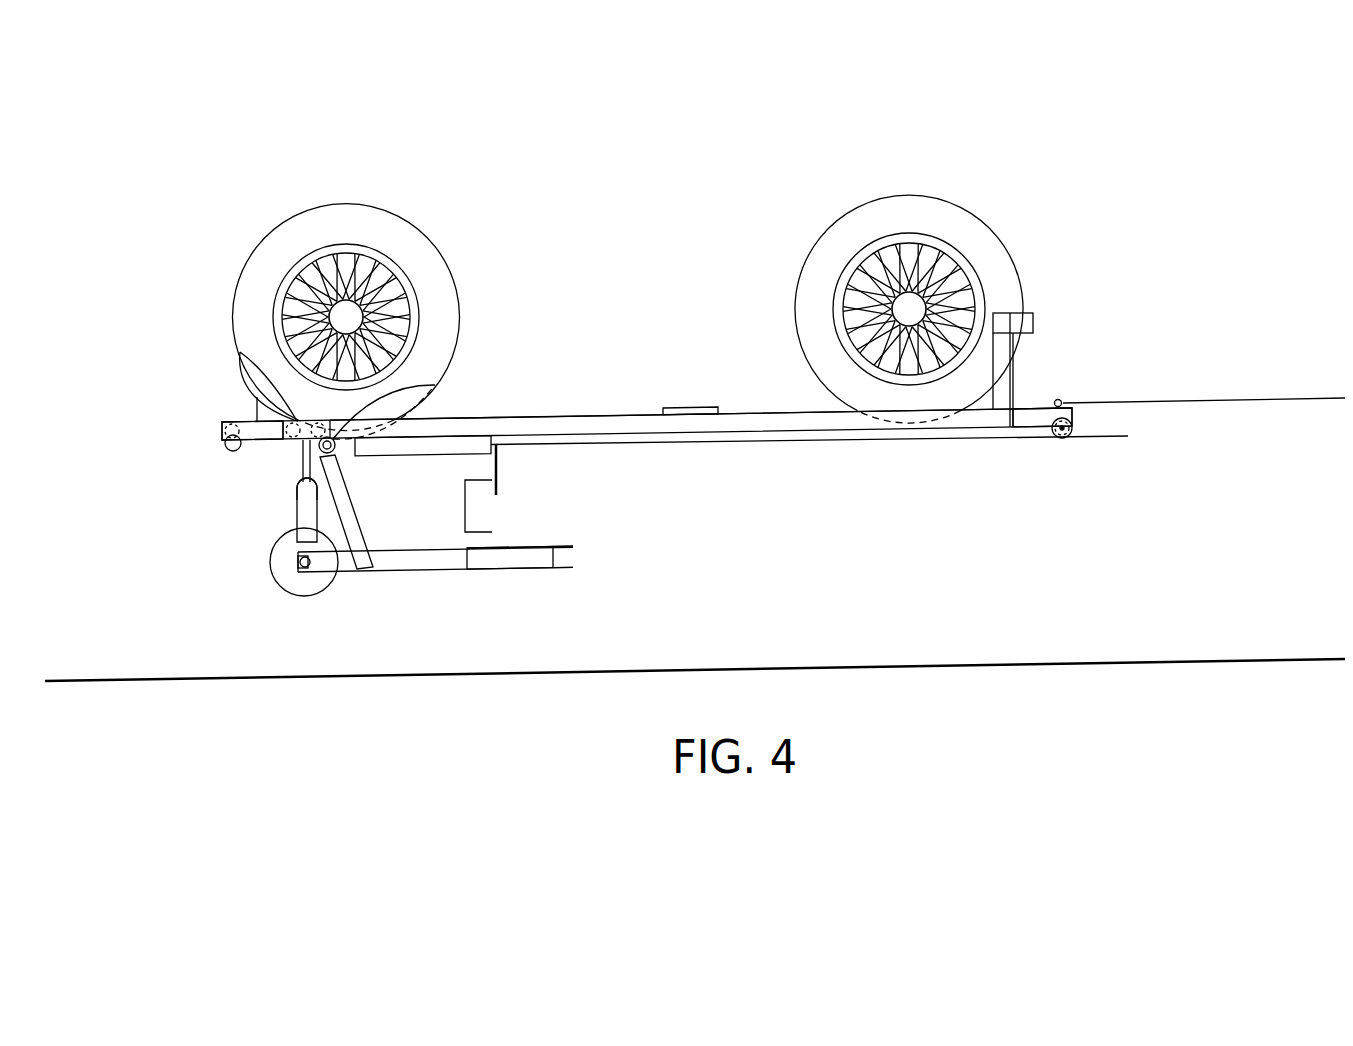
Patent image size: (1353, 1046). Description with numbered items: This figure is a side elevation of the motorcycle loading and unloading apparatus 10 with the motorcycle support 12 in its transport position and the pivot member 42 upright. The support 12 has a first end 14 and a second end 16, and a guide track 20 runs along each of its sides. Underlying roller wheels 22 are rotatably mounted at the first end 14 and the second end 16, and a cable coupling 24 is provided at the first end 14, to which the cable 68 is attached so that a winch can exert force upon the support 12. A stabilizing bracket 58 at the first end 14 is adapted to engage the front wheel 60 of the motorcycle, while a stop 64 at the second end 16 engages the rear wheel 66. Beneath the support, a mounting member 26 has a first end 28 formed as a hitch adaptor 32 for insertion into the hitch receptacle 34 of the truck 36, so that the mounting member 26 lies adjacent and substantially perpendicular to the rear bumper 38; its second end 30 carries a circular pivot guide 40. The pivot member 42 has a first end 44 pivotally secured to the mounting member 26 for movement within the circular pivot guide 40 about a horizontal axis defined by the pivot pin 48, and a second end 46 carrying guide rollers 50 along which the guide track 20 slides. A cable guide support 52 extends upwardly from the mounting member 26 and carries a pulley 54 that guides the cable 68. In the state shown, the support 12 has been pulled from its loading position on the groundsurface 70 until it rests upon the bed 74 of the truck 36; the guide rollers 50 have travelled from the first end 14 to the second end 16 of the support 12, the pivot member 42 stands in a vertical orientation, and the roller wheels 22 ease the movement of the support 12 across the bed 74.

The motorcycle loading and unloading apparatus 10 is at (680, 507).
The motorcycle support 12 is at (777, 422).
The first end 14 is at (1072, 418).
The second end 16 is at (219, 436).
The guide track 20 is at (626, 403).
The underlying roller wheels 22 is at (224, 451).
The cable coupling 24 is at (1057, 400).
The mounting member 26 is at (425, 563).
The first end 28 is at (557, 565).
The second end 30 is at (305, 574).
The hitch adaptor 32 is at (512, 563).
The hitch receptacle 34 is at (538, 547).
The truck 36 is at (438, 464).
The rear bumper 38 is at (473, 498).
The circular pivot guide 40 is at (282, 583).
The pivot member 42 is at (293, 505).
The first end 44 is at (280, 542).
The second end 46 is at (300, 456).
The pivot pin 48 is at (290, 566).
The guide rollers 50 is at (246, 372).
The cable guide support 52 is at (352, 510).
The pulley 54 is at (433, 386).
The stabilizing bracket 58 is at (1033, 313).
The front wheel 60 is at (851, 213).
The stop 64 is at (254, 403).
The rear wheel 66 is at (433, 245).
The cable 68 is at (1266, 397).
The groundsurface 70 is at (940, 663).
The bed 74 is at (863, 440).